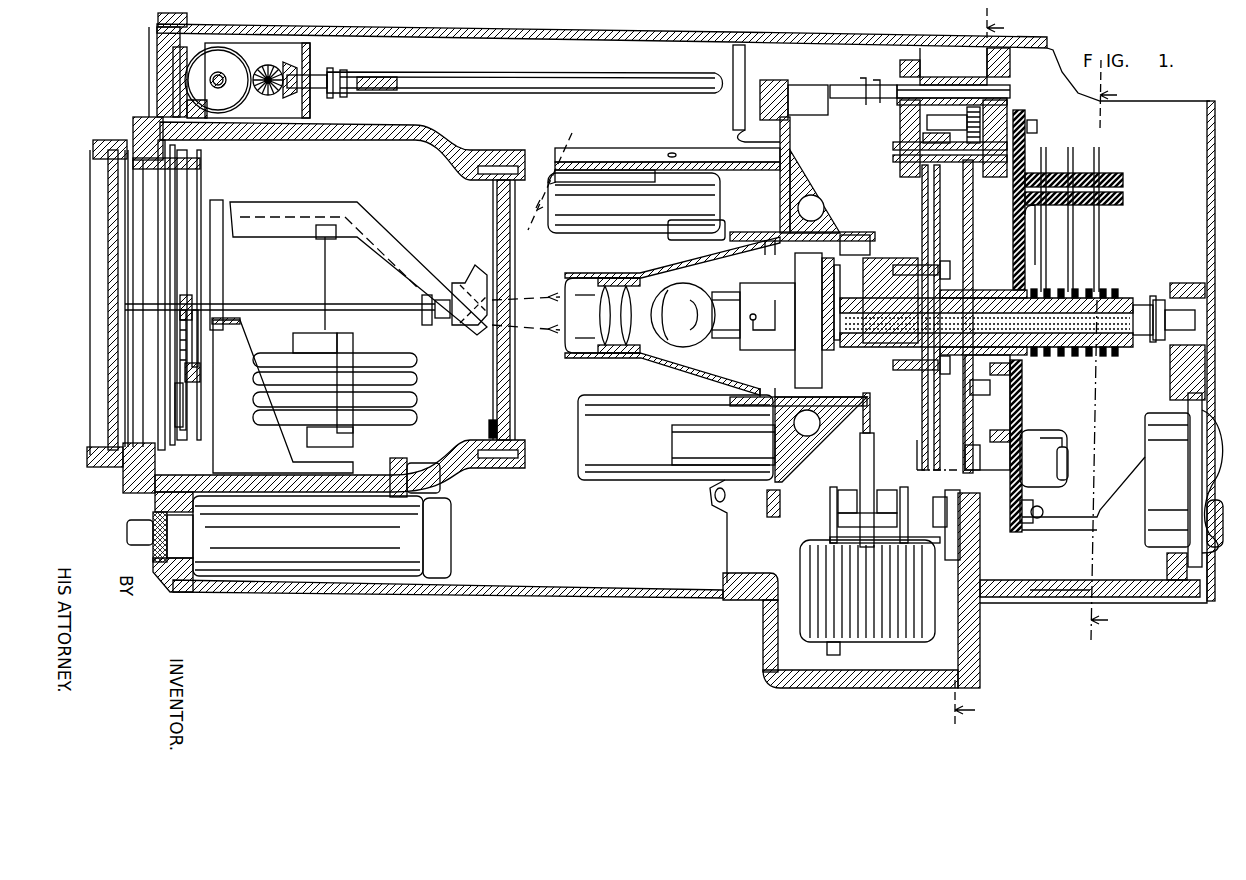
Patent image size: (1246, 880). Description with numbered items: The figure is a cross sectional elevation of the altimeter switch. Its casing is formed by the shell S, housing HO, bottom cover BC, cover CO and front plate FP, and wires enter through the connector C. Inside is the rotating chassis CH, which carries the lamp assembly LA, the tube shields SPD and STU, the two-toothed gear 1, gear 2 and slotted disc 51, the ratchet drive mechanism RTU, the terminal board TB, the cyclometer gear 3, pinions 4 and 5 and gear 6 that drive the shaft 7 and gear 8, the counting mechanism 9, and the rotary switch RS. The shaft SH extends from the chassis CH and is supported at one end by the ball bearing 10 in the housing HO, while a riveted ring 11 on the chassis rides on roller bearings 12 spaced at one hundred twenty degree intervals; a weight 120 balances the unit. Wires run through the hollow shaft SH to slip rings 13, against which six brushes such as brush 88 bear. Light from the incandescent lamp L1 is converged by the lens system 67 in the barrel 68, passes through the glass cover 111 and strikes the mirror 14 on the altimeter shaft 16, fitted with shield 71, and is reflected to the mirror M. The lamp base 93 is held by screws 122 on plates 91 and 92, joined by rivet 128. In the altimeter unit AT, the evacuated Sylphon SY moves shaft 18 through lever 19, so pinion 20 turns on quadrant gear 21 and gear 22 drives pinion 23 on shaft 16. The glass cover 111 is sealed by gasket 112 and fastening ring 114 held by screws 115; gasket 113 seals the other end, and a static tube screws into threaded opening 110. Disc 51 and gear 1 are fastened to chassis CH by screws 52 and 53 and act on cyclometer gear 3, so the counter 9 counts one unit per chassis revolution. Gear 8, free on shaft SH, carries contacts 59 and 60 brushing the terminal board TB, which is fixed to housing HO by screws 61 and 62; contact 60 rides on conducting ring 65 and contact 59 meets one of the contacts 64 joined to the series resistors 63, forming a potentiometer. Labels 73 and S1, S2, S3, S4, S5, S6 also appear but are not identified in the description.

The cover CO is at (1210, 160).
The screws 115 is at (500, 150).
The fastening ring 114 is at (517, 466).
The glass cover 111 is at (515, 378).
The gasket 112 is at (490, 425).
The altimeter unit AT is at (460, 470).
The threaded opening 110 is at (452, 508).
The gasket 113 is at (108, 165).
The front plate FP is at (173, 590).
The knob 73 is at (130, 524).
The rotary switch RS is at (312, 574).
The shell S is at (375, 592).
The bottom cover BC is at (838, 688).
The housing HO is at (1168, 597).
The counting mechanism 9 is at (310, 56).
The shaft 7 is at (578, 78).
The roller bearings 12 is at (785, 82).
The pinion 5 is at (975, 78).
The gear 6 is at (981, 120).
The screw 62 is at (1044, 126).
The cyclometer gear 3 is at (905, 190).
The pinion 4 is at (960, 188).
The gear 8 is at (974, 228).
The terminal board TB is at (1016, 533).
The brush 88 is at (1097, 248).
The chassis CH is at (800, 460).
The ring 11 is at (767, 503).
The mirror M is at (608, 157).
The tube shield SPD is at (565, 150).
The lamp assembly LA is at (690, 258).
The lens system 67 is at (618, 356).
The barrel 68 is at (668, 362).
The incandescent lamp L1 is at (690, 347).
The screws 122 is at (782, 322).
The lamp base 93 is at (791, 318).
The plate 92 is at (836, 332).
The plate 91 is at (830, 355).
The shield 71 is at (470, 278).
The mirror 14 is at (462, 323).
The shaft 18 is at (268, 238).
The lever 19 is at (326, 272).
The shaft 16 is at (342, 306).
The pinion 23 is at (186, 300).
The quadrant gear 21 is at (196, 340).
The pinion 20 is at (201, 372).
The gear 22 is at (184, 405).
The Sylphon SY is at (417, 360).
The tube shield STU is at (620, 481).
The weight 120 is at (700, 466).
The rivet 128 is at (878, 289).
The screw 52 is at (946, 263).
The screw 53 is at (946, 372).
The slip rings 13 is at (1104, 294).
The shaft SH is at (1153, 300).
The ball bearing 10 is at (1191, 341).
The segment S1 is at (1040, 355).
The segment S2 is at (1050, 356).
The segment S3 is at (1062, 356).
The segment S4 is at (1075, 356).
The segment S5 is at (1090, 356).
The segment S6 is at (1104, 356).
The connector C is at (1147, 413).
The gear 2 is at (870, 420).
The slotted disc 51 is at (920, 437).
The two-toothed gear 1 is at (936, 430).
The contact 60 is at (987, 408).
The conducting ring 65 is at (990, 383).
The contact 59 is at (1001, 425).
The contact 64 is at (1010, 450).
The resistors 63 is at (1064, 447).
The screw 61 is at (1038, 506).
The ratchet drive mechanism RTU is at (805, 566).